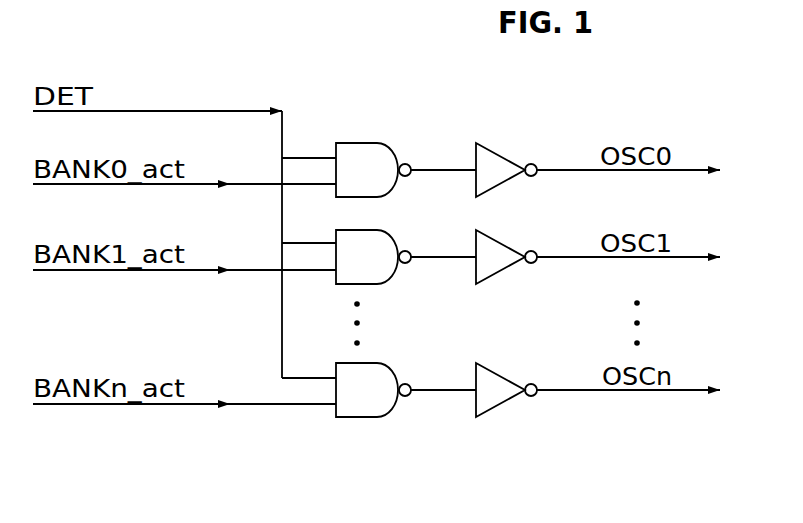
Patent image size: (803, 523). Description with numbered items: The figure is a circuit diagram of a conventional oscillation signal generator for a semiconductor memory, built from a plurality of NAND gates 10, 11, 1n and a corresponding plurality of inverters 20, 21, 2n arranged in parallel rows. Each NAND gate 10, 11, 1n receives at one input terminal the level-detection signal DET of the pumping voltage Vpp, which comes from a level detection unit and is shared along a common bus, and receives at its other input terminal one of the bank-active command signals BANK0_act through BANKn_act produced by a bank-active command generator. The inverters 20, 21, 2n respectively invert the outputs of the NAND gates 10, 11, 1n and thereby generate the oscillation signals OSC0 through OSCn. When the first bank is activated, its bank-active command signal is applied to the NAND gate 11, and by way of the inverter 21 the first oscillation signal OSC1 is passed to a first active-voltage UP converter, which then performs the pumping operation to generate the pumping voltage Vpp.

The NAND gate 10 is at (356, 142).
The NAND gate 11 is at (357, 284).
The NAND gate 1n is at (357, 418).
The inverter 20 is at (510, 148).
The inverter 21 is at (504, 272).
The inverter 2n is at (496, 410).